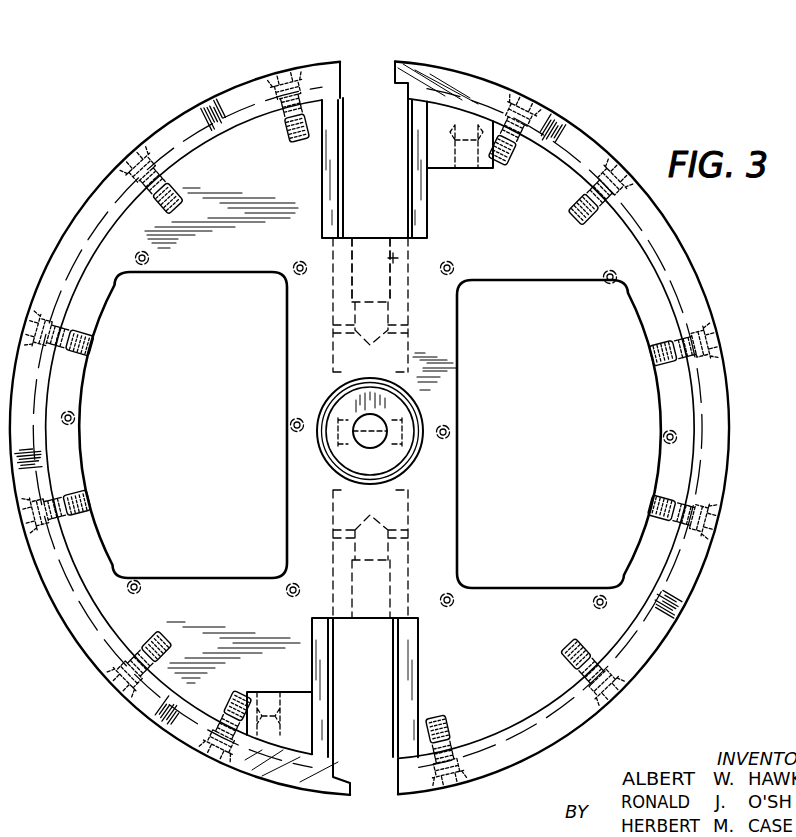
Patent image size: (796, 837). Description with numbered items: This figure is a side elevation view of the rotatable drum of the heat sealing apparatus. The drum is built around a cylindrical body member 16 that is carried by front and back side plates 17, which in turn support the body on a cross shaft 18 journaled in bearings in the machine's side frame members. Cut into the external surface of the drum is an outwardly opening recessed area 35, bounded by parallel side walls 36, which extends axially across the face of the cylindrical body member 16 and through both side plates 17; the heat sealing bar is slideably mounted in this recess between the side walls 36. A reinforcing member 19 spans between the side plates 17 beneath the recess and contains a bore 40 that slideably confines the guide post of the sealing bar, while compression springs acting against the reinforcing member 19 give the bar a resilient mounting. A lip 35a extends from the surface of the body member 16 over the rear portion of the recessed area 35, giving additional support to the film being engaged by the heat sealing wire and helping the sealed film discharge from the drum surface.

The cylindrical body member 16 is at (577, 130).
The side plates 17 is at (611, 257).
The cross shaft 18 is at (392, 407).
The reinforcing member 19 is at (404, 323).
The recessed area 35 is at (365, 90).
The lip 35a is at (400, 66).
The side walls 36 is at (420, 161).
The bore 40 is at (410, 257).